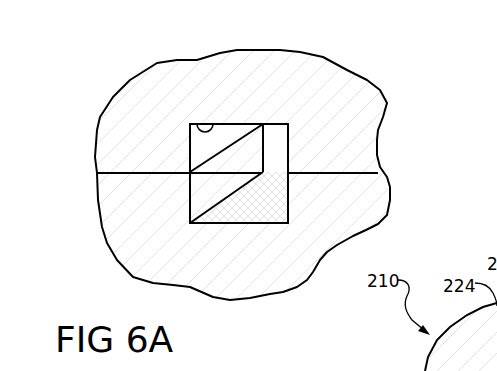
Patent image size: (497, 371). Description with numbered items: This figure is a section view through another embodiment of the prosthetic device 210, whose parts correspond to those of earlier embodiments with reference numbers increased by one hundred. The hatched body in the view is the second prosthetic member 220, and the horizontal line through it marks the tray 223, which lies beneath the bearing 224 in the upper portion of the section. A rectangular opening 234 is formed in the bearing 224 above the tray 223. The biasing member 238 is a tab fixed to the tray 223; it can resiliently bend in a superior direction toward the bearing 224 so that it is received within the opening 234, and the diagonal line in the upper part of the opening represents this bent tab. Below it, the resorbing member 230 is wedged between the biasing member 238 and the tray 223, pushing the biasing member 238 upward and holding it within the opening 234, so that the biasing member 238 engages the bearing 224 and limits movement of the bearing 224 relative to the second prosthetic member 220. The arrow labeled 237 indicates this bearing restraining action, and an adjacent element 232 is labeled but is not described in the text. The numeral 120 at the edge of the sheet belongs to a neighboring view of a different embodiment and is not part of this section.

The prosthetic device 210 is at (97, 92).
The second prosthetic member 220 is at (137, 248).
The tray 223 is at (113, 208).
The bearing 224 is at (174, 74).
The resorbing member 230 is at (268, 212).
The bonded region 232 is at (290, 195).
The opening 234 is at (199, 124).
The flow direction 237 is at (302, 188).
The biasing member 238 is at (253, 152).
The component 120 is at (496, 6).